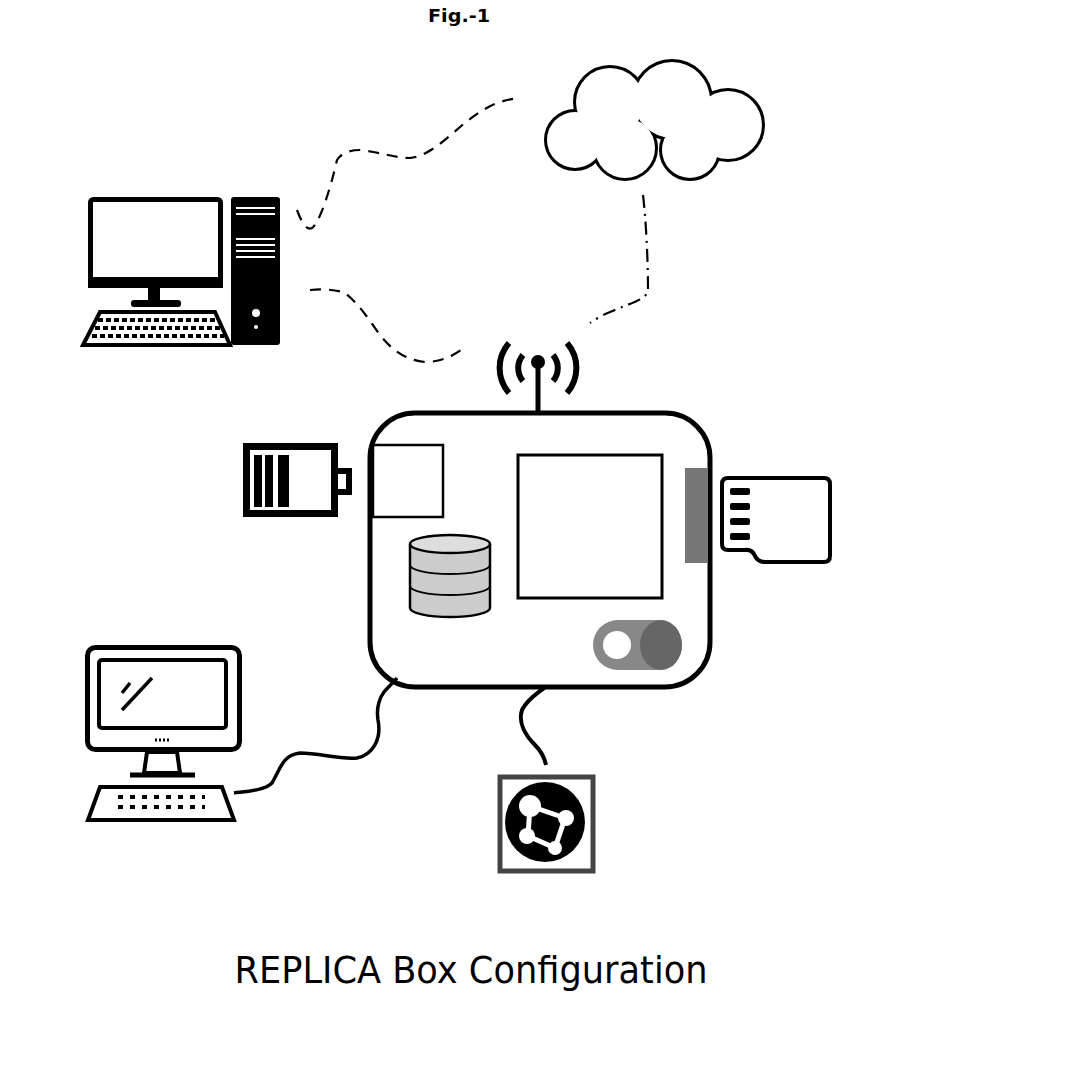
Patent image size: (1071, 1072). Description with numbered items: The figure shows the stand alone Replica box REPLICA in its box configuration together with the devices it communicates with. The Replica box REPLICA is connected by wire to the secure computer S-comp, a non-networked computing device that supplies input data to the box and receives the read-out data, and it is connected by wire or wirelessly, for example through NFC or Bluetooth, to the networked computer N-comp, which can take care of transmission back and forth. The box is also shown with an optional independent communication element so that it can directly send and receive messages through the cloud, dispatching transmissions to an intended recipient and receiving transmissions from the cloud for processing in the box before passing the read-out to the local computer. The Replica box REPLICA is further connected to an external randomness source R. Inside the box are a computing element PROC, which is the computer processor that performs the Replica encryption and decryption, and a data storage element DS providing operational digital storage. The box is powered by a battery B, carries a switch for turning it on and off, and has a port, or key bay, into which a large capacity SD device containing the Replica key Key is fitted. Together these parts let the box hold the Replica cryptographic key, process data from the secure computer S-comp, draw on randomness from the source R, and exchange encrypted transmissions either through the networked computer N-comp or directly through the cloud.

The networked computer N-comp is at (181, 238).
The element cloud is at (654, 120).
The Replica box REPLICA is at (540, 550).
The computing element PROC is at (590, 526).
The data storage element DS is at (450, 576).
The Replica key Key is at (776, 497).
The battery B is at (298, 502).
The secure computer S-comp is at (168, 762).
The external randomness source R is at (577, 824).